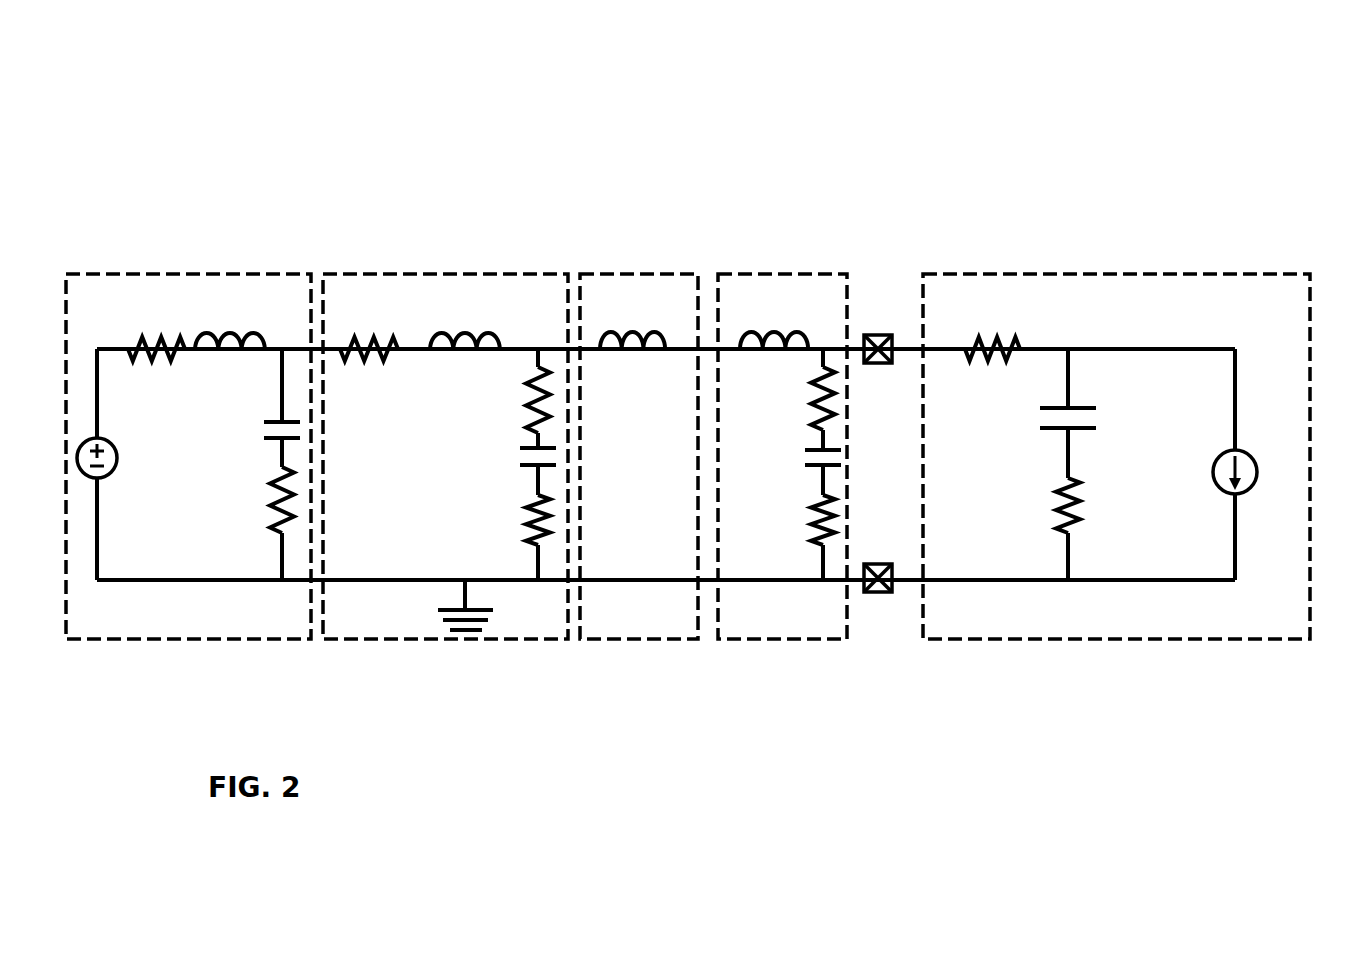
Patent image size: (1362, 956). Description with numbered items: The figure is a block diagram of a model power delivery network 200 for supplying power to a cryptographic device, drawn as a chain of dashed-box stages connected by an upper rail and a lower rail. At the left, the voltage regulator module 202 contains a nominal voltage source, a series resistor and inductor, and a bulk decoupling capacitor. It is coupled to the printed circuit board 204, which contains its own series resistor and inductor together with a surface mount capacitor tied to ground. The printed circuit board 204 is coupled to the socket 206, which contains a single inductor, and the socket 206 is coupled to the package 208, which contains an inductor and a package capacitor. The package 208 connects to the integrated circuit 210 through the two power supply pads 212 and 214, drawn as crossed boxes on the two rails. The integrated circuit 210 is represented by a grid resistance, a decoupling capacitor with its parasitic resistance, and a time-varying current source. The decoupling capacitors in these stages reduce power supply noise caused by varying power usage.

The power delivery network 200 is at (1003, 98).
The voltage regulator module 202 is at (205, 268).
The printed circuit board 204 is at (427, 268).
The socket 206 is at (640, 268).
The package 208 is at (790, 268).
The integrated circuit 210 is at (1118, 268).
The power supply pad 212 is at (878, 333).
The power supply pad 214 is at (878, 592).